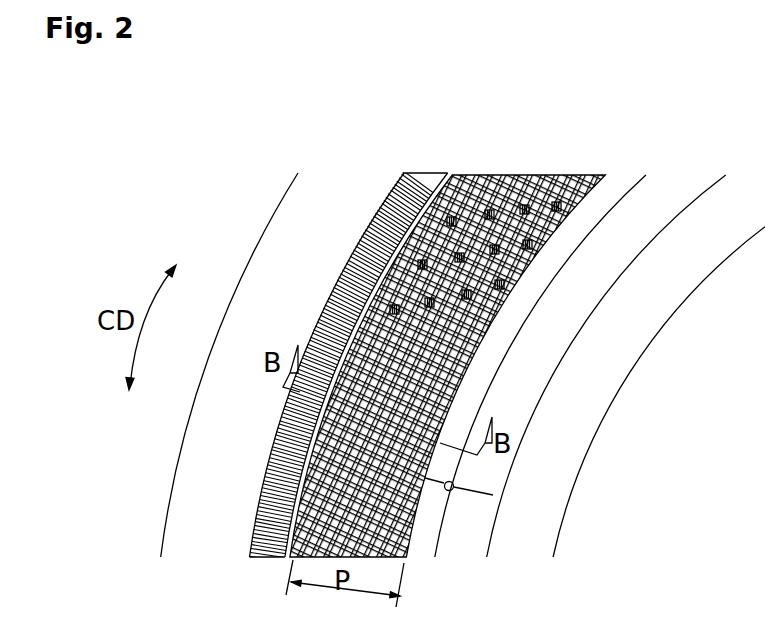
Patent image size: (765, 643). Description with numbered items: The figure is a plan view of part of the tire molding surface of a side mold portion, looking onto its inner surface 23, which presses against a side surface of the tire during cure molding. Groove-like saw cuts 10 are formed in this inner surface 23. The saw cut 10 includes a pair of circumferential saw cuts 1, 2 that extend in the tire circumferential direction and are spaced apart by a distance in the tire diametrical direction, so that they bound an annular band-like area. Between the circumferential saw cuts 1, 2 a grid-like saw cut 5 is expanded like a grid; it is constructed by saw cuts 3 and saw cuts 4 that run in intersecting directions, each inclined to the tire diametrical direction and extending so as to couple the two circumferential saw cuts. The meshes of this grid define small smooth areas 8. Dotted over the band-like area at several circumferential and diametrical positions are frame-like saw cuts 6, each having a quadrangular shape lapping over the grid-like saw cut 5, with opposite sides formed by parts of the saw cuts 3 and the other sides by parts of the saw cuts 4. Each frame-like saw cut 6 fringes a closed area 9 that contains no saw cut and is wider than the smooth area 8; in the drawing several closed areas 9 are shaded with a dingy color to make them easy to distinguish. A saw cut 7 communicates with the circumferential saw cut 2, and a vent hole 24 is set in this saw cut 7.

The circumferential saw cut 1 is at (352, 293).
The circumferential saw cut 2 is at (492, 297).
The saw cut 3 is at (495, 330).
The saw cut 4 is at (480, 365).
The grid-like saw cut 5 is at (680, 379).
The frame-like saw cut 6 is at (492, 195).
The saw cut 7 is at (473, 495).
The smooth area 8 is at (290, 470).
The closed area 9 is at (558, 195).
The saw cut 10 is at (476, 158).
The inner surface 23 is at (346, 195).
The vent hole 24 is at (449, 491).